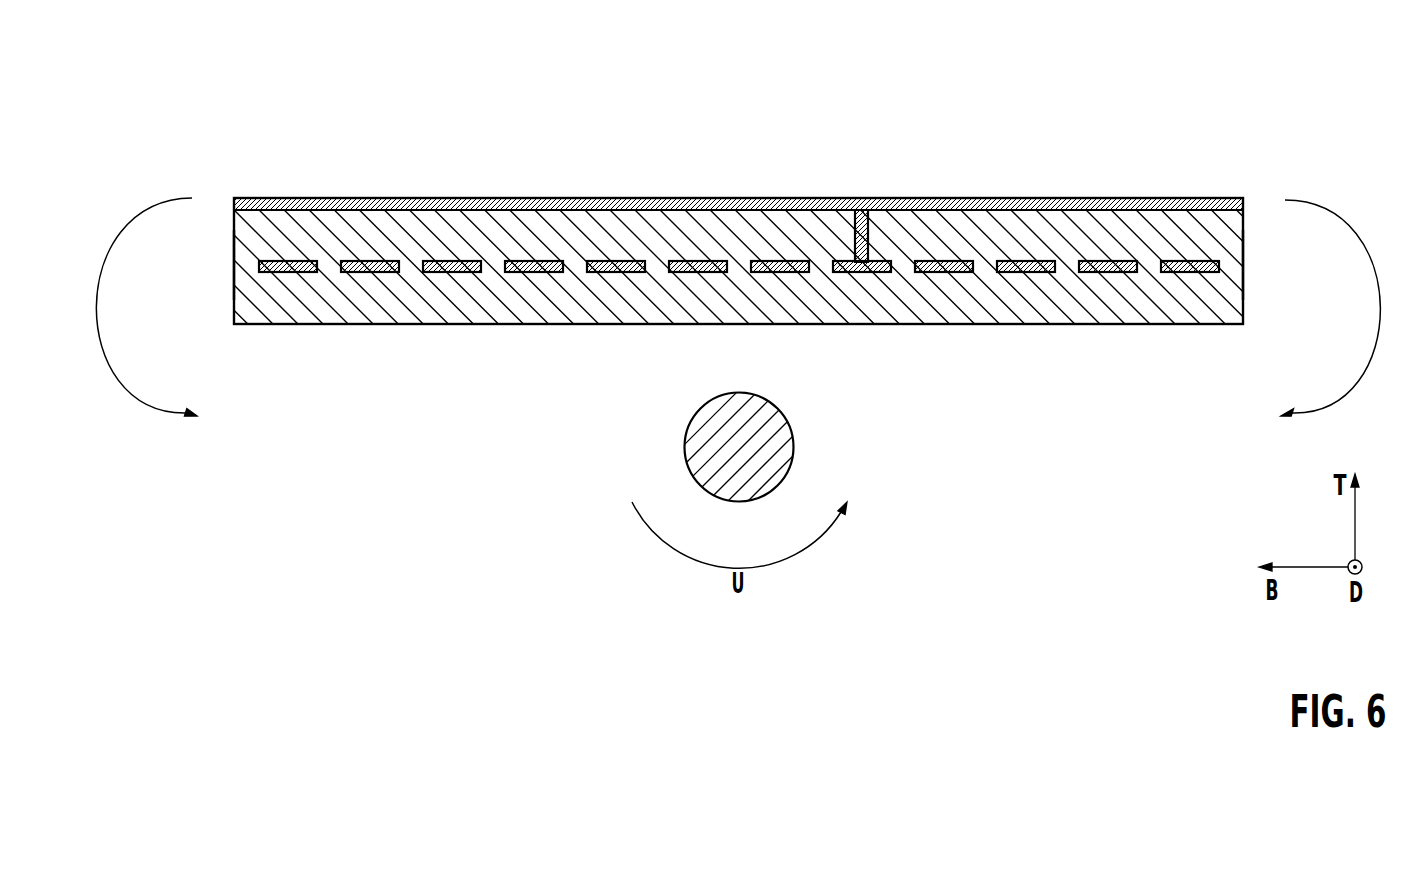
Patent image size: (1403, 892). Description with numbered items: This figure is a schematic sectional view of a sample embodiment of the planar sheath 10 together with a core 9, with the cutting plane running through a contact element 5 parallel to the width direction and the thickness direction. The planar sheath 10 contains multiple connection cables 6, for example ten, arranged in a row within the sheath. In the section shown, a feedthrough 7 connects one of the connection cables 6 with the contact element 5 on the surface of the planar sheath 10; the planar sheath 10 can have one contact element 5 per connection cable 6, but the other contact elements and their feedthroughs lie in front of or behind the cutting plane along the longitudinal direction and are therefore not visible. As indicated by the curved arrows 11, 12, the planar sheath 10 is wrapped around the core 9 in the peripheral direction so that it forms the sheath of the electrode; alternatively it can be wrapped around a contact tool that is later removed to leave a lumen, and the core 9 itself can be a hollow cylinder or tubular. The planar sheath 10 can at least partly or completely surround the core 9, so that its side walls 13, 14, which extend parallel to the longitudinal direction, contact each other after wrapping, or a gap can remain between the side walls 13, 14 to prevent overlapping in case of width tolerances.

The contact element 5 is at (738, 198).
The connection cable 6 is at (858, 273).
The feedthrough 7 is at (869, 240).
The core 9 is at (794, 447).
The planar sheath 10 is at (739, 199).
The curved arrow 11 is at (141, 215).
The curved arrow 12 is at (1338, 215).
The side wall 13 is at (234, 262).
The side wall 14 is at (1243, 262).